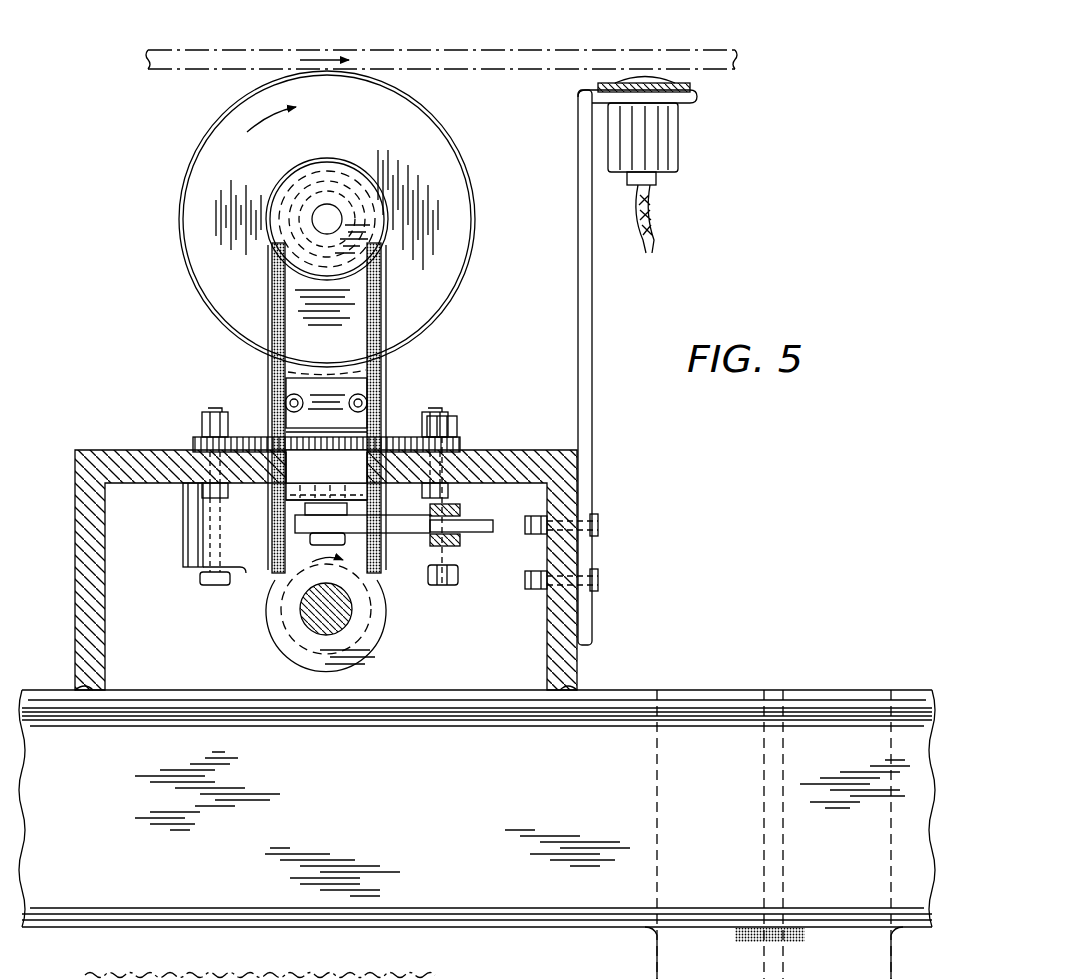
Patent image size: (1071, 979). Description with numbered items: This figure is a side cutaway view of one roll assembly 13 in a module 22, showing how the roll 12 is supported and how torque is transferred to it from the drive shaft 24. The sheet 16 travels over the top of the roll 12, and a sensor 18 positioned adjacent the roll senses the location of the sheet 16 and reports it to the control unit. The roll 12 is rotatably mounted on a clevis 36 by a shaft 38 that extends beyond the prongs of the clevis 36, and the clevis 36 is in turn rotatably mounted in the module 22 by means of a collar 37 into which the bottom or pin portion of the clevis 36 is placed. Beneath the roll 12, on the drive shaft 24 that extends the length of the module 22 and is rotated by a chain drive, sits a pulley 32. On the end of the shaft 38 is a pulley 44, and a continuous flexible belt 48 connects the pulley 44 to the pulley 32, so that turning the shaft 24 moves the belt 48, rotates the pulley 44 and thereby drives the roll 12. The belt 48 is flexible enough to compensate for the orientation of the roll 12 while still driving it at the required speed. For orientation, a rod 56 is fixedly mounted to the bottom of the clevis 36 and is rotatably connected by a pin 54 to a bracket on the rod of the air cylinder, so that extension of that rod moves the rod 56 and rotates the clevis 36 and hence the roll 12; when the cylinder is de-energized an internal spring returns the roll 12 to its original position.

The roll 12 is at (432, 143).
The roll assembly 13 is at (184, 378).
The sheet 16 is at (491, 49).
The sensor 18 is at (662, 143).
The module 22 is at (104, 447).
The shaft 24 is at (345, 616).
The pulley 32 is at (278, 628).
The clevis 36 is at (272, 372).
The collar 37 is at (268, 508).
The shaft 38 is at (320, 208).
The pulley 44 is at (337, 170).
The belt 48 is at (386, 370).
The pin 54 is at (452, 545).
The rod 56 is at (405, 532).